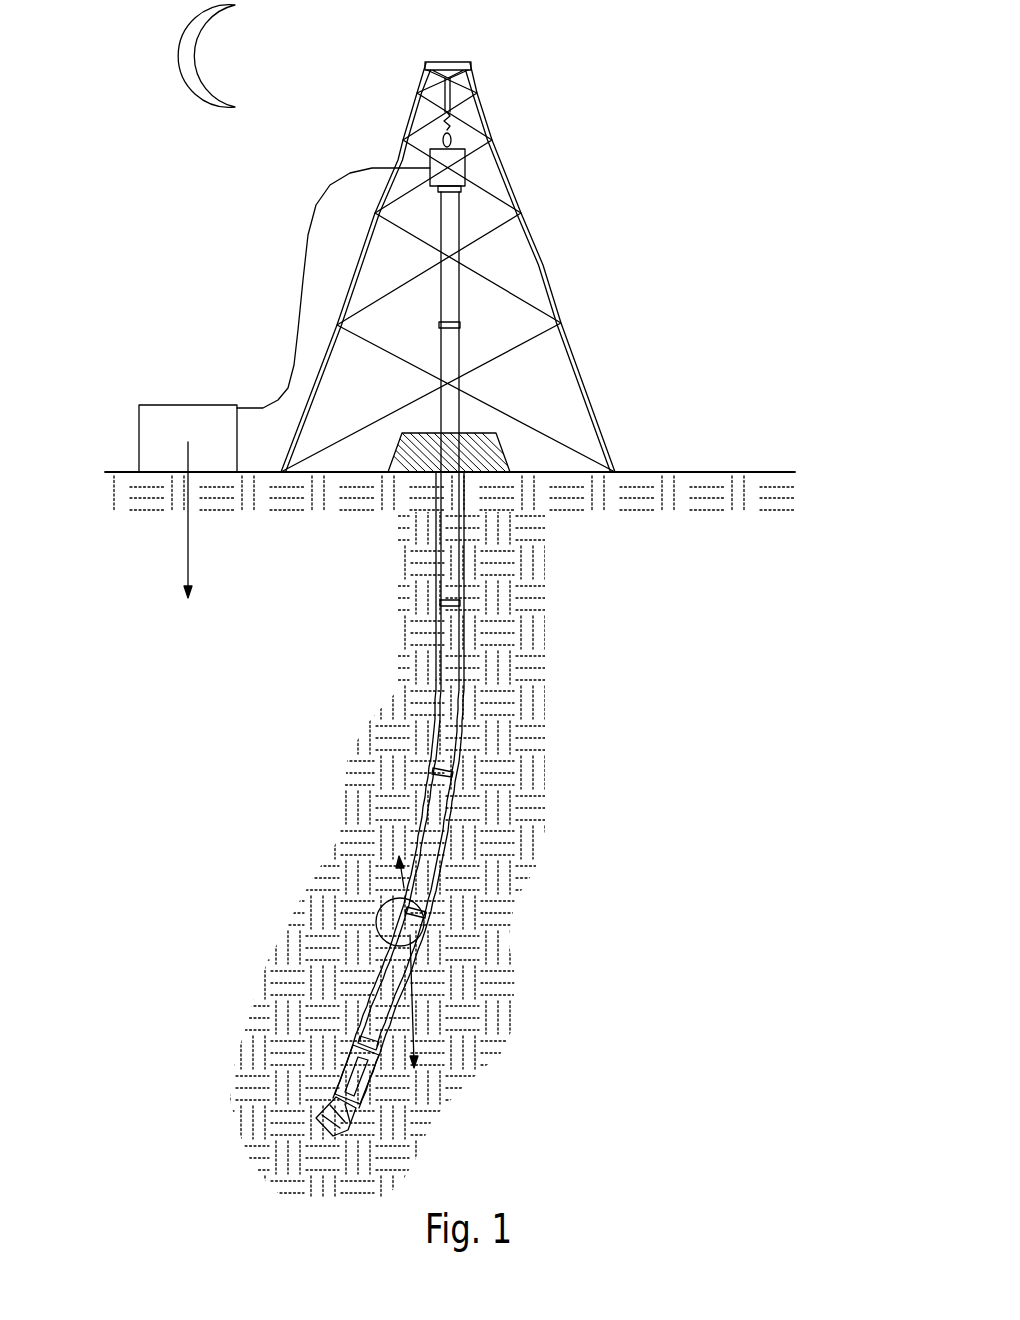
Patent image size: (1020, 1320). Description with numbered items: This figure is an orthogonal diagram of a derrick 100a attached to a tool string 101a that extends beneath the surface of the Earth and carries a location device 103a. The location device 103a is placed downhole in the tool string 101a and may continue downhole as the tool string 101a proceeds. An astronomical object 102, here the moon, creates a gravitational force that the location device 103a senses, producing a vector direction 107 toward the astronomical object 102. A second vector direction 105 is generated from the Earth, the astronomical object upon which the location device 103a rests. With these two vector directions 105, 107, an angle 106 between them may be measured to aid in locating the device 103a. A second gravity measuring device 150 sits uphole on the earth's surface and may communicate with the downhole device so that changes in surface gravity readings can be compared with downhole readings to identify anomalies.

The derrick 100a is at (545, 263).
The tool string 101a is at (555, 537).
The astronomical object 102 is at (203, 128).
The location device 103a is at (427, 912).
The second vector direction 105 is at (398, 980).
The angle 106 is at (373, 921).
The vector direction 107 is at (405, 890).
The second gravity measuring device 150 is at (167, 430).